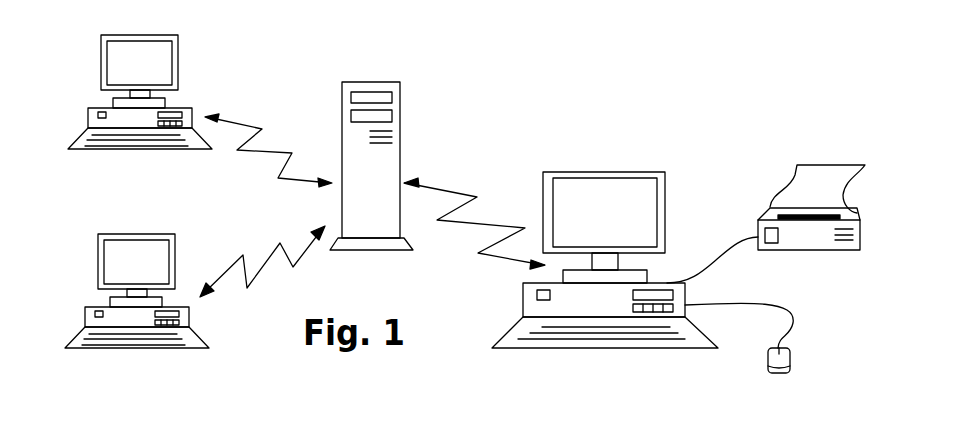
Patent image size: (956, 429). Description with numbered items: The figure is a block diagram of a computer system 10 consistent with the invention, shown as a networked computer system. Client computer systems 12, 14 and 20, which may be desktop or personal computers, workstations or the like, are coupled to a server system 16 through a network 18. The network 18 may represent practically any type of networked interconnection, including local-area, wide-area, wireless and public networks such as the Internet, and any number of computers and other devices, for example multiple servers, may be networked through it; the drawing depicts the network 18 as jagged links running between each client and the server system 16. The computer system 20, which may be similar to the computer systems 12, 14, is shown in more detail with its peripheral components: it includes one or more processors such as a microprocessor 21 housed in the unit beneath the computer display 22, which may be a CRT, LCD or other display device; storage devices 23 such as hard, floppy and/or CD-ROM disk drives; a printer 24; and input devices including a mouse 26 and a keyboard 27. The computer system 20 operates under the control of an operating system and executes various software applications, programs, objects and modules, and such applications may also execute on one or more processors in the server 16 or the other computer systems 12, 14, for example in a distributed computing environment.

The computer system 10 is at (532, 88).
The client computer system 12 is at (107, 52).
The client computer system 14 is at (100, 240).
The server system 16 is at (357, 82).
The network 18 is at (275, 155).
The computer system 20 is at (658, 170).
The microprocessor 21 is at (575, 308).
The computer display 22 is at (578, 175).
The storage devices 23 is at (648, 312).
The printer 24 is at (773, 218).
The mouse 26 is at (787, 362).
The keyboard 27 is at (512, 347).